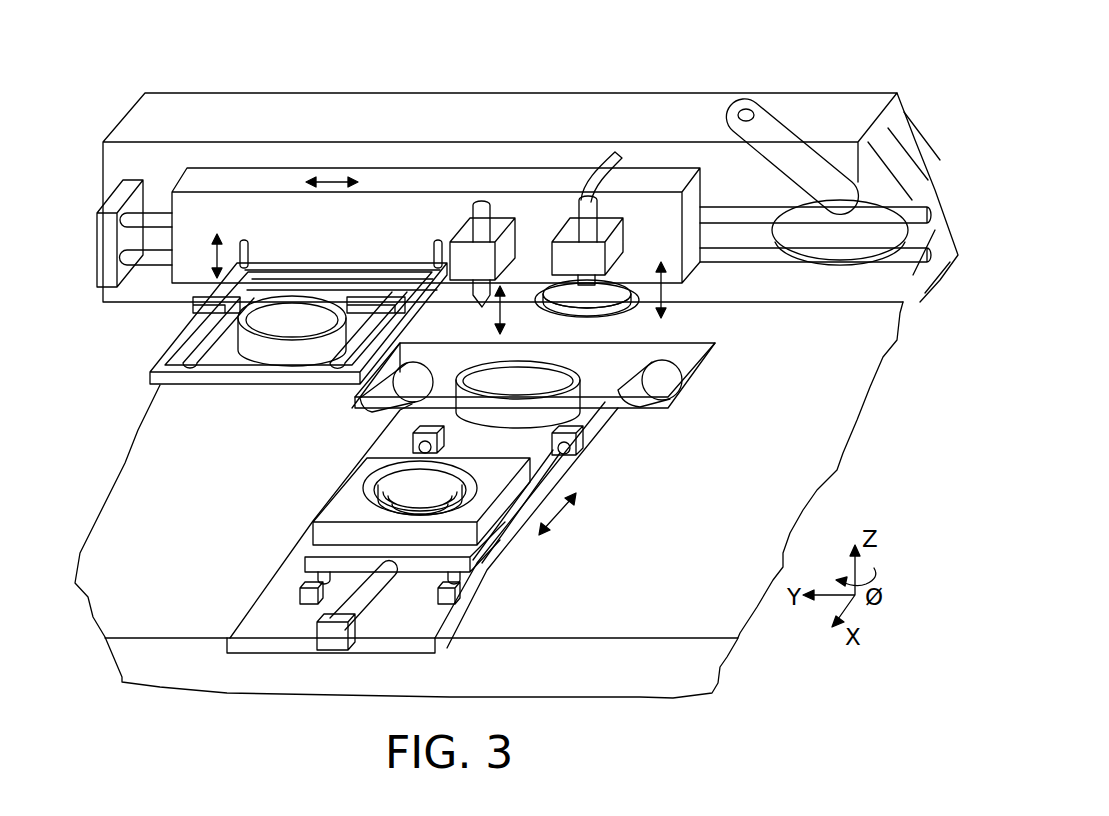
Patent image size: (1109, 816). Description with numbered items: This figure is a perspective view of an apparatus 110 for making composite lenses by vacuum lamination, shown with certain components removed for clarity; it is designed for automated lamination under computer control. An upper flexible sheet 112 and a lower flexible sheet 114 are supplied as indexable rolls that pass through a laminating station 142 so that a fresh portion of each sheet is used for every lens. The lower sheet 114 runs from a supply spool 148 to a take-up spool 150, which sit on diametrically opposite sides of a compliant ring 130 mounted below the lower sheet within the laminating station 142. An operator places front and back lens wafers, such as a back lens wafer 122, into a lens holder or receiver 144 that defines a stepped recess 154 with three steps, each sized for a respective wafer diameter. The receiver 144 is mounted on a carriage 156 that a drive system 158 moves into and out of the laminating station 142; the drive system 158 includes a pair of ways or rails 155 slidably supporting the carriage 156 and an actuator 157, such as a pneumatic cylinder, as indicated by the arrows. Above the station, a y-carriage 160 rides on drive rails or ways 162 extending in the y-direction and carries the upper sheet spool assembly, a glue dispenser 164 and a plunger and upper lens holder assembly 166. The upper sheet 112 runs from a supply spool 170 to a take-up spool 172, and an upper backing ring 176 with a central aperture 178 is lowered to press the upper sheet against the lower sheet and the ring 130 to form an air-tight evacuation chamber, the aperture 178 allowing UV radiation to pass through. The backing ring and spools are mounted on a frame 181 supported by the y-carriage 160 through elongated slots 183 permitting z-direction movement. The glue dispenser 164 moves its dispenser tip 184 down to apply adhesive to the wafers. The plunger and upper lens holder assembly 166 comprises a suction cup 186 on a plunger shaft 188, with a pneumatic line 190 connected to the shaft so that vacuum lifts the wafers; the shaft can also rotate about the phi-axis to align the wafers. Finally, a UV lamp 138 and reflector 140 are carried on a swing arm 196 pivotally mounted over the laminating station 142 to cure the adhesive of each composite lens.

The apparatus 110 is at (555, 95).
The upper flexible sheet 112 is at (228, 362).
The lower flexible sheet 114 is at (655, 376).
The back lens wafer 122 is at (573, 311).
The compliant ring 130 is at (572, 411).
The UV lamp 138 is at (823, 270).
The reflector 140 is at (863, 272).
The laminating station 142 is at (683, 358).
The lens holder or receiver 144 is at (340, 504).
The supply spool 148 is at (383, 407).
The take-up spool 150 is at (636, 403).
The stepped recess 154 is at (456, 465).
The ways or rails 155 is at (417, 449).
The carriage 156 is at (315, 553).
The actuator 157 is at (366, 594).
The drive system 158 is at (372, 620).
The y-carriage 160 is at (223, 187).
The drive rails or ways 162 is at (718, 253).
The glue dispenser 164 is at (516, 241).
The plunger and upper lens holder assembly 166 is at (627, 256).
The supply spool 170 is at (190, 362).
The take-up spool 172 is at (345, 357).
The upper backing ring 176 is at (278, 357).
The central aperture 178 is at (300, 305).
The frame 181 is at (275, 262).
The elongated slots 183 is at (243, 243).
The dispenser tip 184 is at (476, 293).
The suction cup 186 is at (613, 300).
The plunger shaft 188 is at (590, 226).
The pneumatic line 190 is at (588, 196).
The swing arm 196 is at (780, 143).